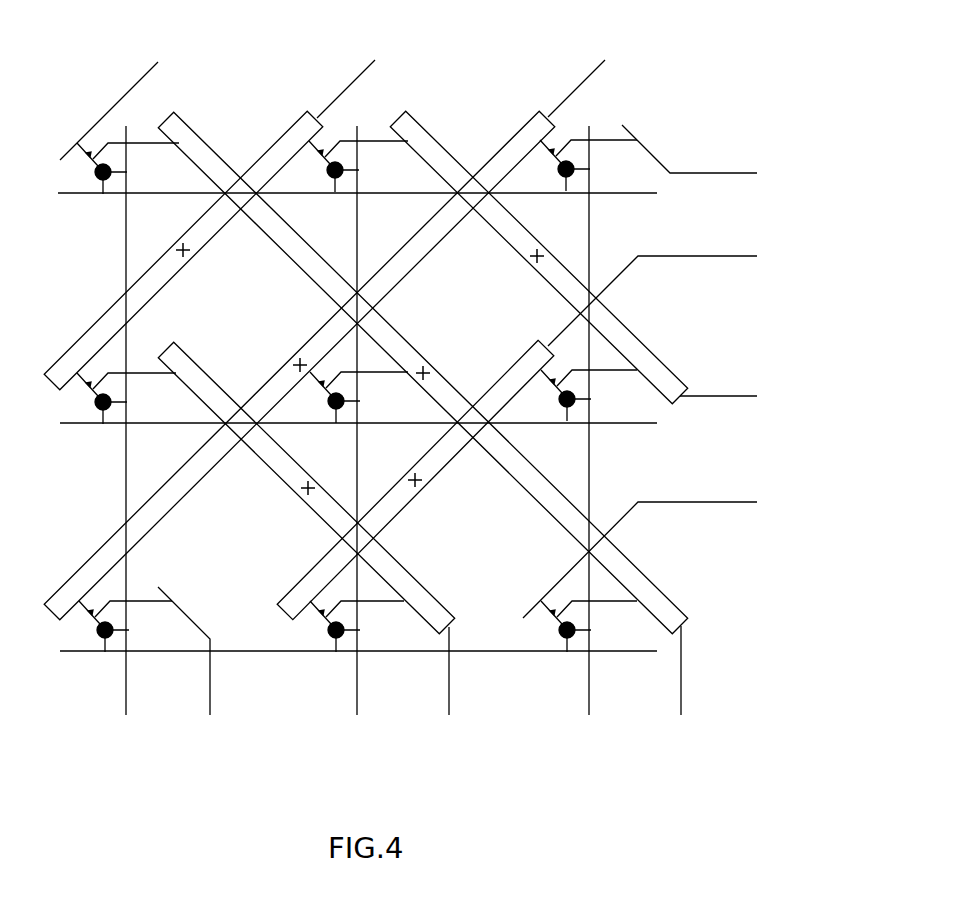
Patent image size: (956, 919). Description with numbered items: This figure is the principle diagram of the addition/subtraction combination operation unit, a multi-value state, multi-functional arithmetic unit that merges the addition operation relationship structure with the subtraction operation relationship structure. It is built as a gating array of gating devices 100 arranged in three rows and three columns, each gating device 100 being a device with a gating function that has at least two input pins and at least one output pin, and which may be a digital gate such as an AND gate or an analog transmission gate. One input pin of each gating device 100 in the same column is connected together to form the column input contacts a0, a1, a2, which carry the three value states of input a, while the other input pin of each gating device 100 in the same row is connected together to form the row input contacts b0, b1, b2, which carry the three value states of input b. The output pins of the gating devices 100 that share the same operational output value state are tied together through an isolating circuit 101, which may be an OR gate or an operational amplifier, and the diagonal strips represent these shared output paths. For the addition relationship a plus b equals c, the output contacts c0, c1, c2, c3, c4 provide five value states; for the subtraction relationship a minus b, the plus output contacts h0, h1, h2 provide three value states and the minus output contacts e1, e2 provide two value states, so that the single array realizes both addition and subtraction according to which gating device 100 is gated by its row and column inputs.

The gating device 100 is at (577, 623).
The isolating circuit 101 is at (622, 347).
The column input contact a0 is at (125, 436).
The column input contact a1 is at (356, 436).
The column input contact a2 is at (589, 436).
The row input contact b0 is at (340, 652).
The row input contact b1 is at (340, 423).
The row input contact b2 is at (340, 193).
The output contact c0 is at (189, 666).
The output contact c1 is at (449, 686).
The output contact c2 is at (681, 686).
The output contact c3 is at (734, 397).
The output contact c4 is at (705, 154).
The output contact (minus) e1 is at (350, 77).
The output contact (minus) e2 is at (115, 98).
The output contact (plus) h0 is at (582, 75).
The output contact (plus) h1 is at (669, 296).
The output contact (plus) h2 is at (657, 555).